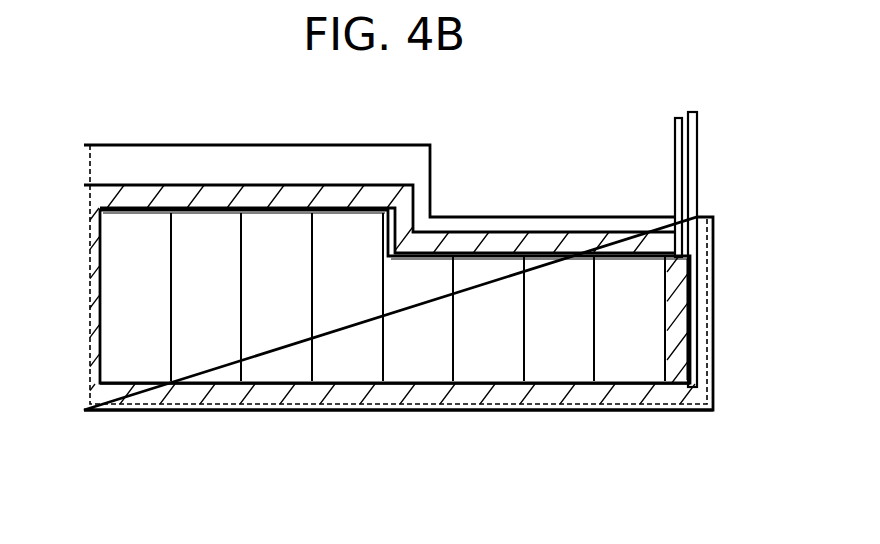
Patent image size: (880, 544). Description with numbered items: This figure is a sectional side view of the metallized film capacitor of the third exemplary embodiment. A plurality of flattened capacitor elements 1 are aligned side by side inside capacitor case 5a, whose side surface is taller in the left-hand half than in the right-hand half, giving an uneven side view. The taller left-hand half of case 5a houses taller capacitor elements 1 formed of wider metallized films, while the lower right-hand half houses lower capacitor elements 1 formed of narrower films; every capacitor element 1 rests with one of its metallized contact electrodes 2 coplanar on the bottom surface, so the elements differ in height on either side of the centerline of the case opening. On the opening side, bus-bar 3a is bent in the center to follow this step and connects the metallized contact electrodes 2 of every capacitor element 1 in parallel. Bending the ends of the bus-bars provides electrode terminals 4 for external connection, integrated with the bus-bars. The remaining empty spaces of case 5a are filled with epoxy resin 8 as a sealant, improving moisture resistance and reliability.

The capacitor element 1 is at (135, 265).
The metallized contact electrode 2 is at (106, 184).
The bus-bar 3a is at (495, 247).
The electrode terminal 4 is at (682, 132).
The capacitor case 5a is at (500, 408).
The epoxy resin 8 is at (253, 185).